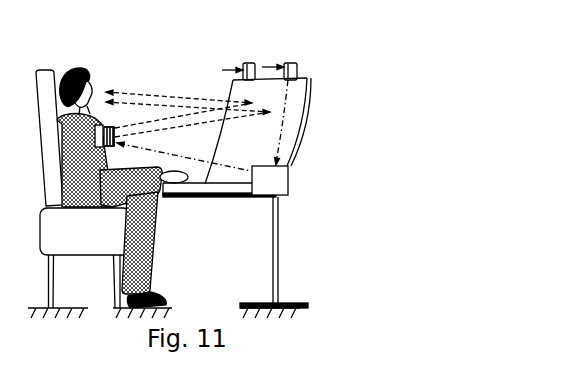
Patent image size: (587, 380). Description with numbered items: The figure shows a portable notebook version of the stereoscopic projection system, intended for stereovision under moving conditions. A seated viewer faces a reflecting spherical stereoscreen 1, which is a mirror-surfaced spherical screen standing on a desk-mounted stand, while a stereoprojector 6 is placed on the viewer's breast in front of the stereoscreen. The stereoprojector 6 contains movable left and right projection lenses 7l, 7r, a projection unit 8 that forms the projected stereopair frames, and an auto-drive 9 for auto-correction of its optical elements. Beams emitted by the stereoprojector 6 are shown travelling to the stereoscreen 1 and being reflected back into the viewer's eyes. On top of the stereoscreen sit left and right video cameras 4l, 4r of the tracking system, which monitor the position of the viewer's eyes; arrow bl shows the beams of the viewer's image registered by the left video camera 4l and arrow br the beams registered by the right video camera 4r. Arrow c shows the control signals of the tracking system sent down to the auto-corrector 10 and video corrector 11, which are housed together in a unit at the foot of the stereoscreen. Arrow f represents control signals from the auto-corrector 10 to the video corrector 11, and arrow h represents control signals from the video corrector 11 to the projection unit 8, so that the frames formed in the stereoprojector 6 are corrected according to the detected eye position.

The reflecting spherical stereoscreen 1 is at (306, 112).
The left video camera 4l is at (247, 63).
The right video camera 4r is at (297, 68).
The beams registered by the left video camera bl is at (222, 62).
The beams registered by the right video camera br is at (269, 55).
The control signals of the tracking system c is at (275, 122).
The control signals from the auto-corrector to the video corrector f is at (184, 154).
The control signals from the video corrector to the projection units h is at (184, 154).
The stereoprojector 6 is at (93, 93).
The projection unit 8 is at (93, 93).
The auto-drive 9 is at (99, 125).
The left projection lens 7l is at (140, 79).
The right projection lens 7r is at (115, 128).
The auto-corrector 10 is at (306, 193).
The video corrector 11 is at (275, 178).